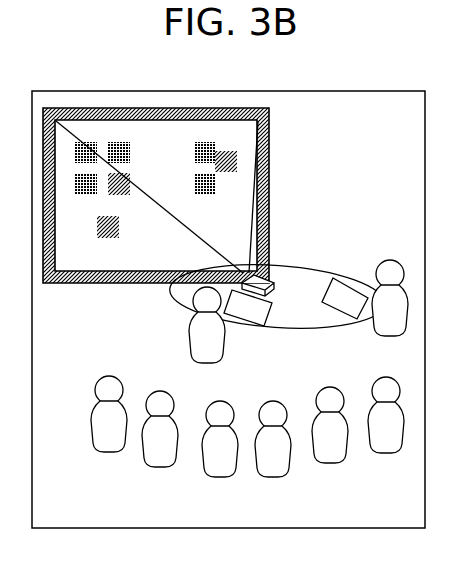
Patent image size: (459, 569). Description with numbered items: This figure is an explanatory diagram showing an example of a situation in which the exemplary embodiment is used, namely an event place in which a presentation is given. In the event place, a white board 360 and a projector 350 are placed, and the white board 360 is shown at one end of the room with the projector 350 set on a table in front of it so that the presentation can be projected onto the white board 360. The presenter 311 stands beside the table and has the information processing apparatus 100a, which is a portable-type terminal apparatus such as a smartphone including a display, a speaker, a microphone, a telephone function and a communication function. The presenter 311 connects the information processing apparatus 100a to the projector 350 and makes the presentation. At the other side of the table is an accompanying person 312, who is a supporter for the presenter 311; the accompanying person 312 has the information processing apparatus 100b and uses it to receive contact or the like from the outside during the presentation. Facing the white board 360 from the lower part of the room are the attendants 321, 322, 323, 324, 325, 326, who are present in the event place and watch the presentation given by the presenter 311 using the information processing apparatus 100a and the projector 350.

The white board 360 is at (270, 147).
The projector 350 is at (270, 276).
The information processing apparatus 100a is at (247, 326).
The information processing apparatus 100b is at (340, 315).
The presenter 311 is at (188, 346).
The accompanying person 312 is at (390, 260).
The attendant 321 is at (109, 452).
The attendant 322 is at (160, 467).
The attendant 323 is at (220, 477).
The attendant 324 is at (273, 477).
The attendant 325 is at (330, 463).
The attendant 326 is at (386, 453).